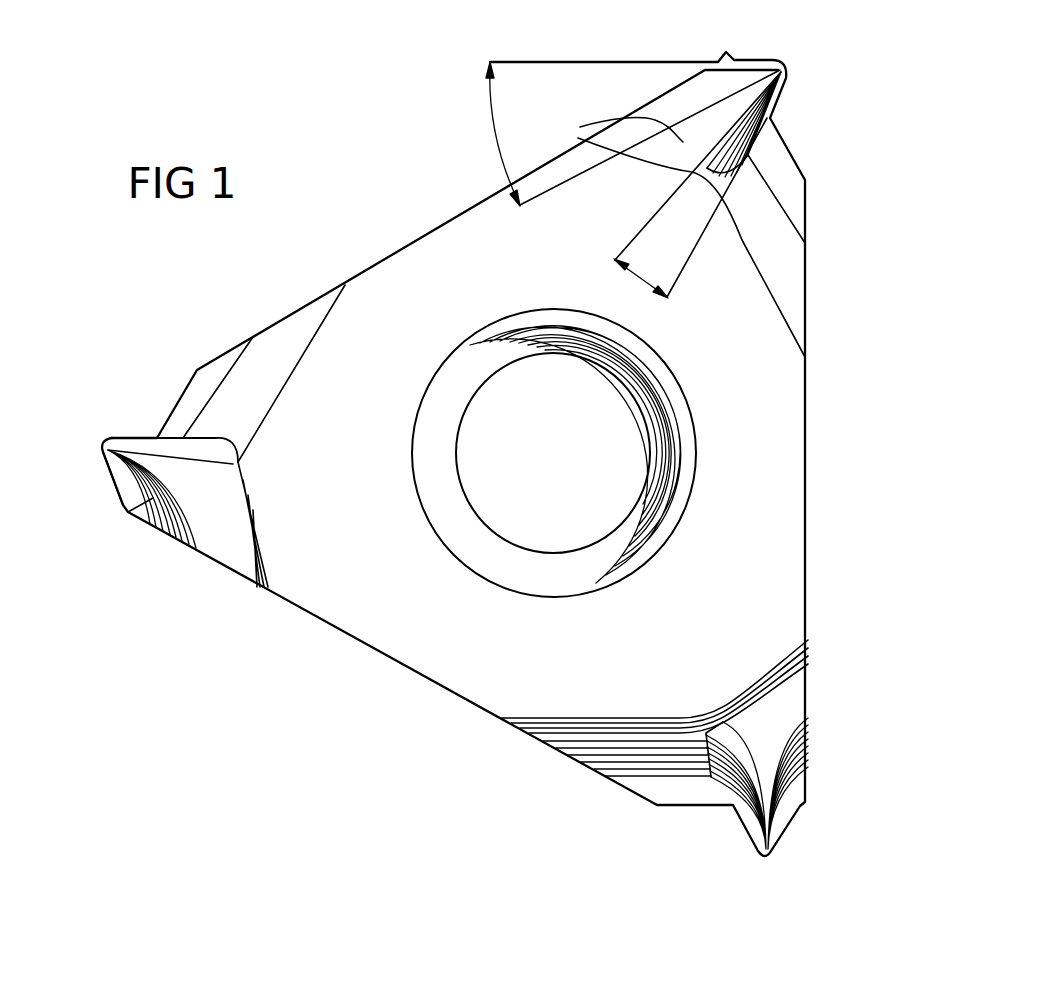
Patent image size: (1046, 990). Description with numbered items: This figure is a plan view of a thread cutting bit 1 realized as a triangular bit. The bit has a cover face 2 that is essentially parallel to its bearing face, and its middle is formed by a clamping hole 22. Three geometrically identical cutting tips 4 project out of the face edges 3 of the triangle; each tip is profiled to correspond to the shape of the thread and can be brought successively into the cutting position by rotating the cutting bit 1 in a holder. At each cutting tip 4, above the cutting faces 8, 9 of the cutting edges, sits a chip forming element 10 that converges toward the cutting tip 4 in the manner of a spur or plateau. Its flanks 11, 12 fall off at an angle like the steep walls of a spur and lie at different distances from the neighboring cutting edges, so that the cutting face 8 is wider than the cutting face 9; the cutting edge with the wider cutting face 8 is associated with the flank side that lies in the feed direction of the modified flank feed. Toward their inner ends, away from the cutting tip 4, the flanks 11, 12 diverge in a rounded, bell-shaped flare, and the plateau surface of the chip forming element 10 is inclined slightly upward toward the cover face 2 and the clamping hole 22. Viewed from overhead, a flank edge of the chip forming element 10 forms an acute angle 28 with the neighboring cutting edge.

The thread cutting bit 1 is at (407, 245).
The cover face 2 is at (775, 449).
The face edges 3 is at (638, 88).
The cutting tips 4 is at (814, 68).
The cutting face 8 is at (116, 477).
The cutting face 9 is at (134, 438).
The chip forming element 10 is at (202, 497).
The flank 11 is at (128, 513).
The flank 12 is at (182, 452).
The clamping hole 22 is at (541, 470).
The acute angle 28 is at (490, 134).